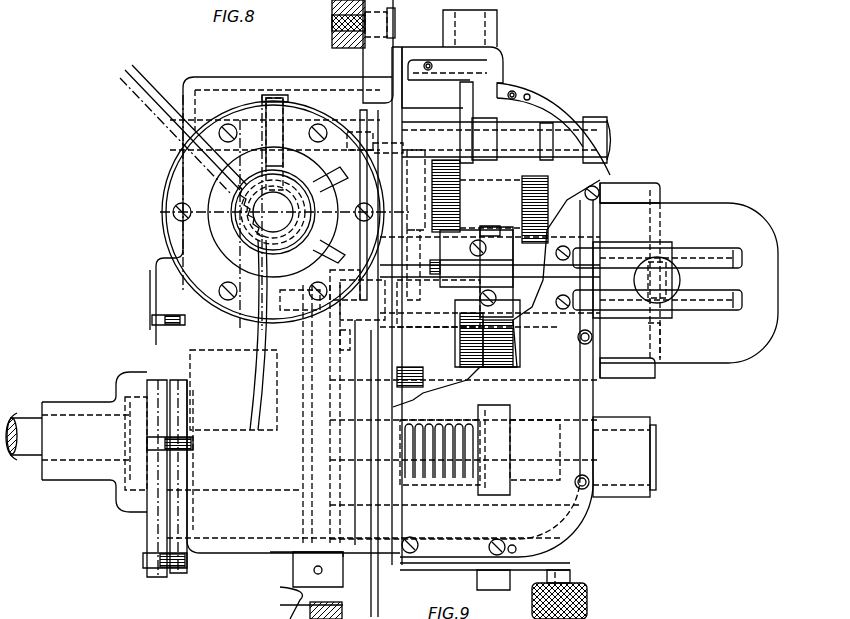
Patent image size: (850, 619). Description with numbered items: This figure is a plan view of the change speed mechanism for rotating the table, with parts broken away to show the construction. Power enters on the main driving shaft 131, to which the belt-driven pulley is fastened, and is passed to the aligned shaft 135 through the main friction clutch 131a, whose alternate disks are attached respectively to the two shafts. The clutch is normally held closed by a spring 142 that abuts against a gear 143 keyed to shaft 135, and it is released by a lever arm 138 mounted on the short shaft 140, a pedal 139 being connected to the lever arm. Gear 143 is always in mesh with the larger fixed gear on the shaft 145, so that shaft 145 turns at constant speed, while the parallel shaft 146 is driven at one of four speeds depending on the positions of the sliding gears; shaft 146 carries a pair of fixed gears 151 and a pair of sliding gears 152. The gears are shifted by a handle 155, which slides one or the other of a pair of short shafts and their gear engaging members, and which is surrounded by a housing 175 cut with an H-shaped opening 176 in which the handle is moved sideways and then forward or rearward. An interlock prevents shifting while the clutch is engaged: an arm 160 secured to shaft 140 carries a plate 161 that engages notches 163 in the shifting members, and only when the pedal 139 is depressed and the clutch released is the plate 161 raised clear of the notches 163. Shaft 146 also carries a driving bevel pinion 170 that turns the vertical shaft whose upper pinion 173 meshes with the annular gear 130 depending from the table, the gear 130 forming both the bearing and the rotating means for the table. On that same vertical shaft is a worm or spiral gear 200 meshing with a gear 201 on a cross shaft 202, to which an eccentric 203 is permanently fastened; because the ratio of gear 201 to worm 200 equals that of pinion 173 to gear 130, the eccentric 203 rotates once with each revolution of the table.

The gear 130 is at (176, 122).
The shaft 131 is at (27, 425).
The main friction clutch 131a is at (193, 505).
The shaft 135 is at (656, 450).
The lever arm 138 is at (273, 577).
The pedal 139 is at (587, 606).
The short shaft 140 is at (310, 596).
The spring 142 is at (445, 483).
The gear 143 is at (497, 495).
The shaft 145 is at (660, 340).
The shaft 146 is at (660, 218).
The fixed gears 151 is at (362, 130).
The sliding gears 152 is at (452, 188).
The handle 155 is at (672, 270).
The arm 160 is at (307, 337).
The plate 161 is at (470, 240).
The notches 163 is at (512, 236).
The driving bevel pinion 170 is at (308, 223).
The pinion 173 is at (192, 188).
The housing 175 is at (764, 276).
The opening 176 is at (725, 304).
The worm or spiral gear 200 is at (236, 226).
The gear 201 is at (272, 100).
The cross shaft 202 is at (523, 135).
The eccentric 203 is at (470, 90).